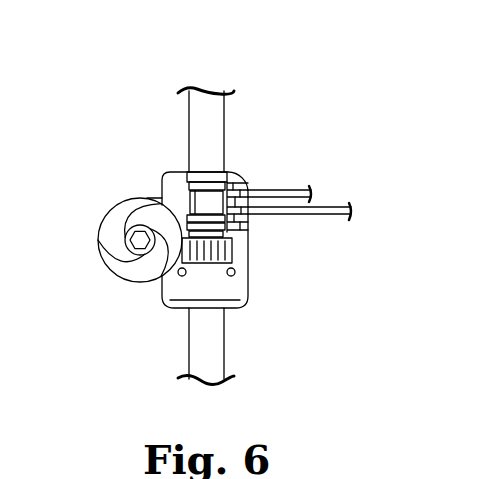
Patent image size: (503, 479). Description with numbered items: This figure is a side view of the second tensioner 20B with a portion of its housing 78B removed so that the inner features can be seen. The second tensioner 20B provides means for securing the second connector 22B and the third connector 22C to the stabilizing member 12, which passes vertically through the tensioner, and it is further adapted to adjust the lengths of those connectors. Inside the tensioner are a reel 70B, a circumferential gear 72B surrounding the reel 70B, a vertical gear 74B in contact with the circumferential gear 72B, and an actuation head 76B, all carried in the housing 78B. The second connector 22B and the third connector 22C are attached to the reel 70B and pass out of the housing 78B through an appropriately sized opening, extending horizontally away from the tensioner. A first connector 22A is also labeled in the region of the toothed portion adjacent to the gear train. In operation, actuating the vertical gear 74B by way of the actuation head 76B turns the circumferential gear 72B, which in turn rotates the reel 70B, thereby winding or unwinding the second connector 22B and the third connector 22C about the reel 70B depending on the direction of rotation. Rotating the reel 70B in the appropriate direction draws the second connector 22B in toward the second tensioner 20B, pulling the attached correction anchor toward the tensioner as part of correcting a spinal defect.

The stabilizing member 12 is at (218, 368).
The second tensioner 20B is at (93, 114).
The first connector 22A is at (226, 235).
The second connector 22B is at (320, 207).
The third connector 22C is at (205, 184).
The reel 70B is at (193, 202).
The circumferential gear 72B is at (228, 252).
The vertical gear 74B is at (102, 254).
The actuation head 76B is at (132, 261).
The housing 78B is at (245, 292).